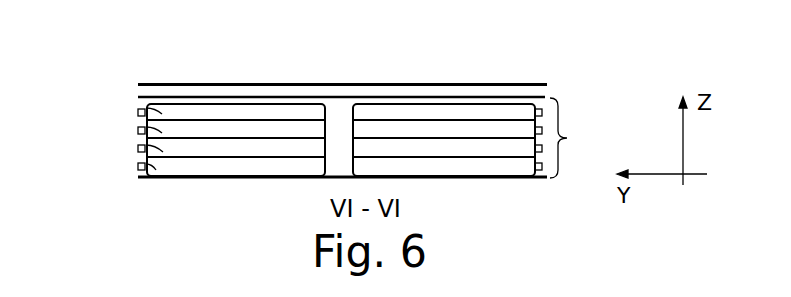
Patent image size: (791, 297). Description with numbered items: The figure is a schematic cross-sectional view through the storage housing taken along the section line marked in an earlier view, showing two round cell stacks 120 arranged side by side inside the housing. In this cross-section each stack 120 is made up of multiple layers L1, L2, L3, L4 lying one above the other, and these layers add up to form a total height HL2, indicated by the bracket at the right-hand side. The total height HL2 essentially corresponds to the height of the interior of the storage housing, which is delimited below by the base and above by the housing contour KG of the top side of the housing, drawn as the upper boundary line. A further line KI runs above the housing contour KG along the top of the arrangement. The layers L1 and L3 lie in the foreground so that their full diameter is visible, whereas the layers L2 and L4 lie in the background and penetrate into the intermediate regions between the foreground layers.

The adhesive layer KI is at (170, 85).
The housing contour KG is at (545, 97).
The heating layer stack 120 is at (288, 110).
The layer L1 is at (138, 167).
The layer L2 is at (138, 148).
The layer L3 is at (138, 130).
The layer L4 is at (138, 111).
The total height HL2 is at (585, 138).